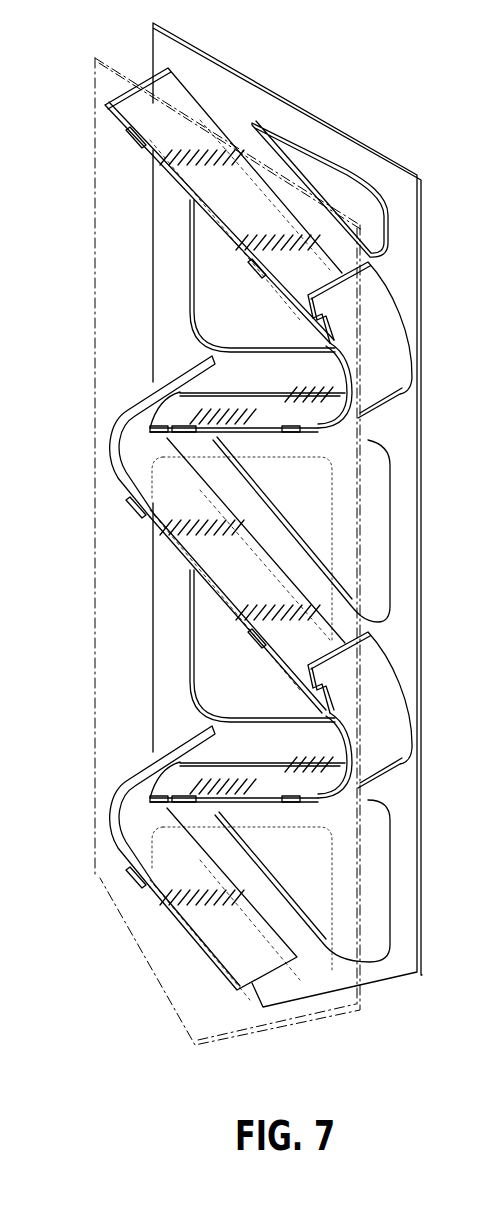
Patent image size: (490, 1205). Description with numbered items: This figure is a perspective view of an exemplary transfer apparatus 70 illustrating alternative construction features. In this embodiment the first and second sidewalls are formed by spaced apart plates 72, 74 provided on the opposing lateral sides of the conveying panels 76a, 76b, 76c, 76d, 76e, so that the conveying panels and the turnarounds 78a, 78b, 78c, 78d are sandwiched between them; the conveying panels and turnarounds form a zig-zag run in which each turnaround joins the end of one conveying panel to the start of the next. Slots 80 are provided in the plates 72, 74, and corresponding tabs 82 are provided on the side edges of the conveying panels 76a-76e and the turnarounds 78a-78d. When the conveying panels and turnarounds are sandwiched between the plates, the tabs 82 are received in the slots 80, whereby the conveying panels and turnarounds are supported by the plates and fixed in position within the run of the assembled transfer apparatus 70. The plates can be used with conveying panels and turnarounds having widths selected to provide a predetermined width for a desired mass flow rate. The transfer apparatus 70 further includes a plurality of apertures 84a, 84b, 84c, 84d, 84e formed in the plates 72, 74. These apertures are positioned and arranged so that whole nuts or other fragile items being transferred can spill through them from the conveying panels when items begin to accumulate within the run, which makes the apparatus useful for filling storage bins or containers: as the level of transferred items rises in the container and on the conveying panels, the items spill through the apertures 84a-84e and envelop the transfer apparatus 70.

The transfer apparatus 70 is at (135, 1040).
The plate 72 is at (122, 62).
The plate 74 is at (207, 56).
The conveying panel 76a is at (178, 179).
The conveying panel 76b is at (322, 412).
The conveying panel 76c is at (205, 560).
The conveying panel 76d is at (322, 782).
The conveying panel 76e is at (208, 936).
The turnaround 78a is at (388, 403).
The turnaround 78b is at (110, 452).
The turnaround 78c is at (386, 772).
The turnaround 78d is at (110, 822).
The slot 80 is at (198, 104).
The tab 82 is at (137, 146).
The aperture 84a is at (347, 176).
The aperture 84b is at (198, 275).
The aperture 84c is at (390, 538).
The aperture 84d is at (198, 672).
The aperture 84e is at (390, 936).